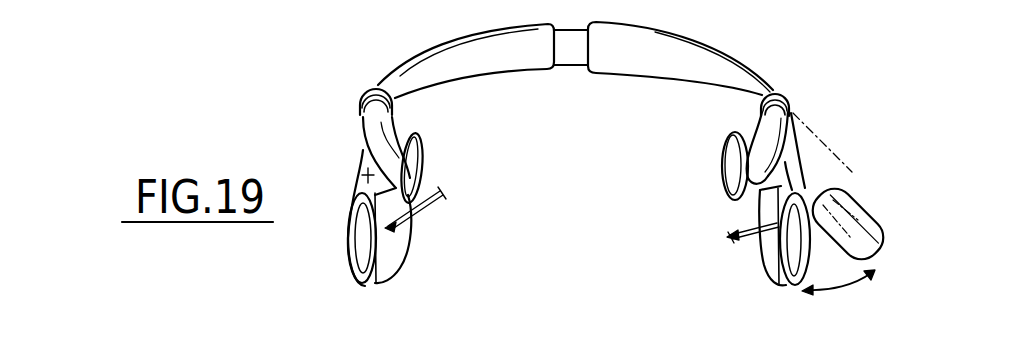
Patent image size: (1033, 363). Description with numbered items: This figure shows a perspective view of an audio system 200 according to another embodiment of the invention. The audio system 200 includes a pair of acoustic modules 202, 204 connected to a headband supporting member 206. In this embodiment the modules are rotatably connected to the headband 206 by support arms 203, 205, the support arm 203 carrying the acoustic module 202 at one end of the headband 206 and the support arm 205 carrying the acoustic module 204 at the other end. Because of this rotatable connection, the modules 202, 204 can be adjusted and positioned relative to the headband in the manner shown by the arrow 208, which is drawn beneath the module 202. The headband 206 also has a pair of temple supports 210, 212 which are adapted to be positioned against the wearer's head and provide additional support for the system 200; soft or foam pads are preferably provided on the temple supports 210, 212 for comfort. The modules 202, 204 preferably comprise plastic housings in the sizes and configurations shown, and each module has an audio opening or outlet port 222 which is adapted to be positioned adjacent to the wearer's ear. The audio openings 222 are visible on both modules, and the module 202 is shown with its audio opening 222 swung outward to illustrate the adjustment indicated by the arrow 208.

The audio system 200 is at (273, 111).
The acoustic module 202 is at (760, 206).
The support arm 203 is at (778, 93).
The acoustic module 204 is at (362, 172).
The support arm 205 is at (373, 92).
The headband supporting member 206 is at (703, 38).
The arrow 208 is at (844, 287).
The temple support 210 is at (721, 155).
The temple support 212 is at (421, 160).
The audio opening 222 is at (360, 254).